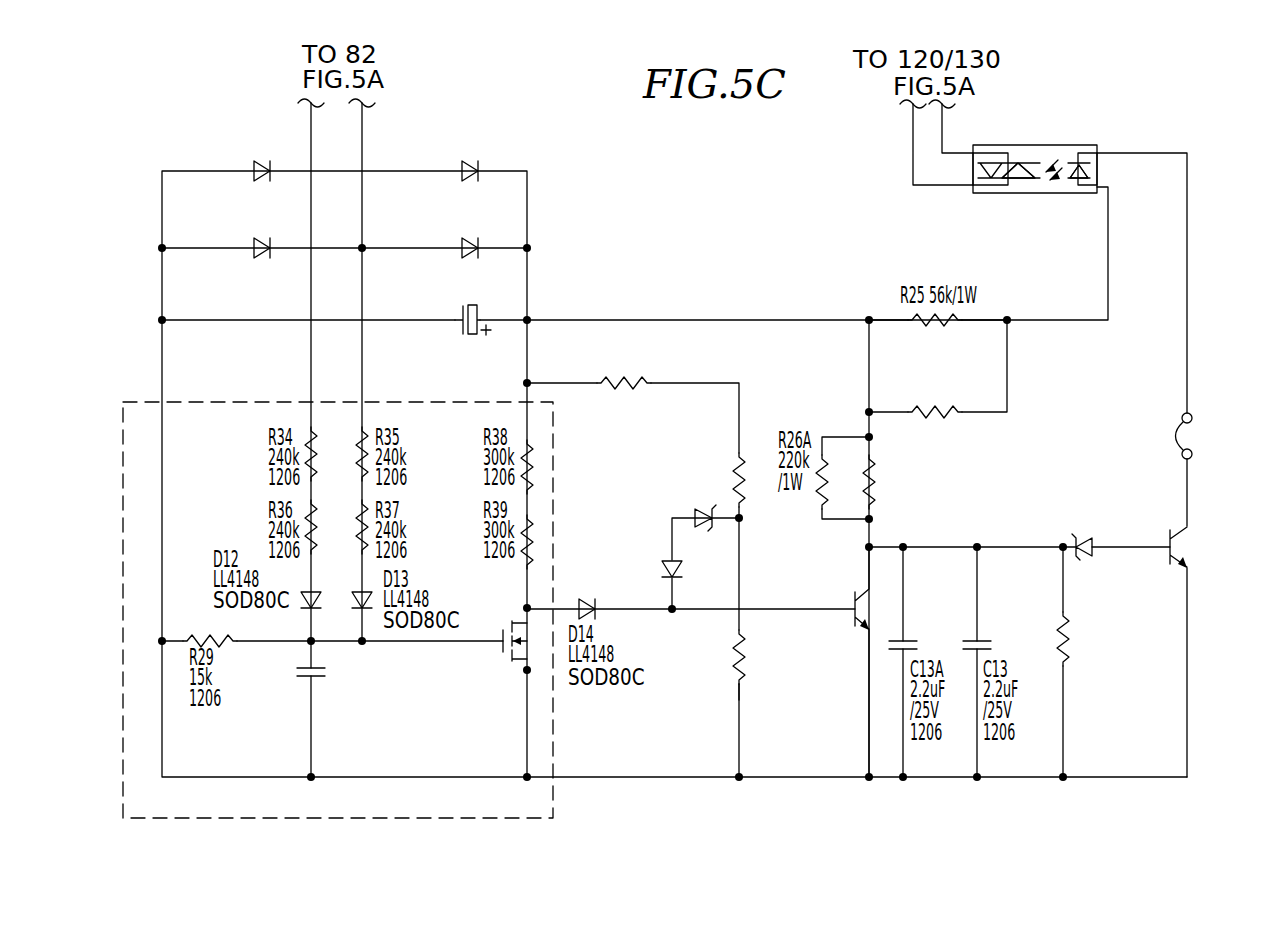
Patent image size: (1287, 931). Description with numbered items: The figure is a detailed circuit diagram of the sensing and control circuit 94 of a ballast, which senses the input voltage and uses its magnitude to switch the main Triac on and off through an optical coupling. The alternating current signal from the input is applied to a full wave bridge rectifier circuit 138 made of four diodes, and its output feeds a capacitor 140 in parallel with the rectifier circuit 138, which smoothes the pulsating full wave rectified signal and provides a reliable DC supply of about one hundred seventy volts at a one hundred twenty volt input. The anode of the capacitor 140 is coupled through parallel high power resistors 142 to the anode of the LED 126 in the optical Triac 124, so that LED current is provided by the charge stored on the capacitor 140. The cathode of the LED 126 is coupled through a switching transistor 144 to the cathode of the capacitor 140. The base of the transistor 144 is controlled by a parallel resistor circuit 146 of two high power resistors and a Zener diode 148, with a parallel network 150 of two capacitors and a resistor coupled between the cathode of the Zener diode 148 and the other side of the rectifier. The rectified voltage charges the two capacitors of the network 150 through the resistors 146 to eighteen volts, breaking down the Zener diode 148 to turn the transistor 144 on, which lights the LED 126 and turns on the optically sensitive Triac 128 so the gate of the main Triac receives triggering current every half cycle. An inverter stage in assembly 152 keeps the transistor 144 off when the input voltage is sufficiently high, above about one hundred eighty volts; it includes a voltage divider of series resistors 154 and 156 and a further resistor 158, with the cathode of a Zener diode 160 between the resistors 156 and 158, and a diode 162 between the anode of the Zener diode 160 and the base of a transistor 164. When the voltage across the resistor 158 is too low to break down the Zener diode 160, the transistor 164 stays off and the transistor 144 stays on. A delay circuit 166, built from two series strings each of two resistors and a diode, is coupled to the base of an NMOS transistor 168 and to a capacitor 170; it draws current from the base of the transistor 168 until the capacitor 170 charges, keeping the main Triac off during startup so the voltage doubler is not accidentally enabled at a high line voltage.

The full wave bridge rectifier circuit 138 is at (252, 112).
The capacitor 140 is at (462, 310).
The delay circuit 166 is at (553, 812).
The capacitor 170 is at (304, 676).
The NMOS transistor 168 is at (513, 667).
The resistor 154 is at (646, 378).
The resistor 156 is at (742, 470).
The Zener diode 160 is at (706, 500).
The diode 162 is at (660, 570).
The inverter stage assembly 152 is at (697, 647).
The resistor 158 is at (745, 685).
The transistor 164 is at (863, 628).
The parallel resistors 142 is at (966, 417).
The parallel resistor circuit 146 is at (893, 513).
The optical Triac 124 is at (975, 160).
The optically sensitive Triac 128 is at (1020, 178).
The LED 126 is at (1085, 170).
The sensing and control circuit 94 is at (1198, 492).
The Zener diode 148 is at (1084, 572).
The switching transistor 144 is at (1210, 578).
The parallel network 150 is at (1090, 645).